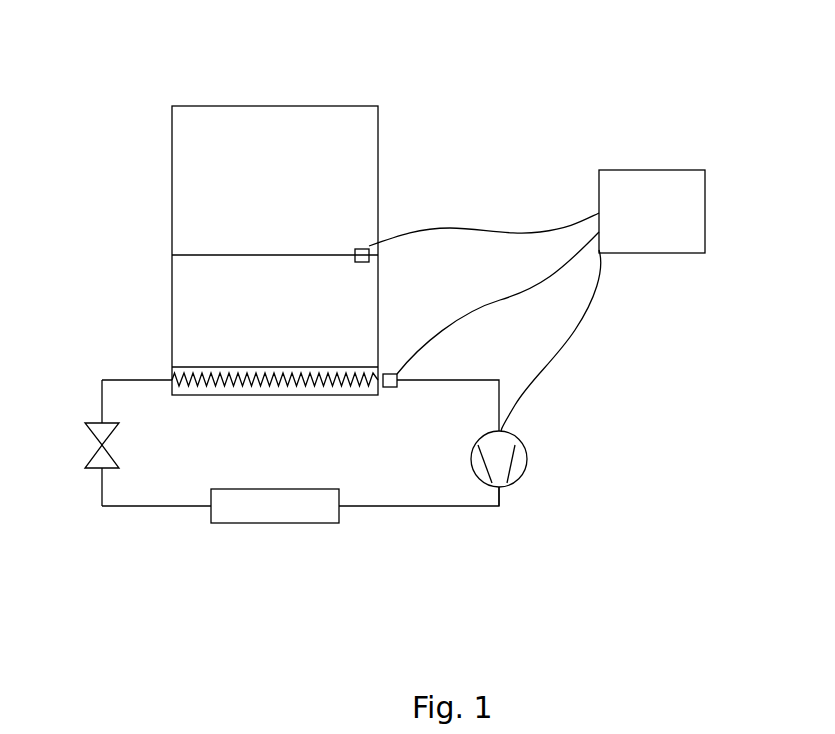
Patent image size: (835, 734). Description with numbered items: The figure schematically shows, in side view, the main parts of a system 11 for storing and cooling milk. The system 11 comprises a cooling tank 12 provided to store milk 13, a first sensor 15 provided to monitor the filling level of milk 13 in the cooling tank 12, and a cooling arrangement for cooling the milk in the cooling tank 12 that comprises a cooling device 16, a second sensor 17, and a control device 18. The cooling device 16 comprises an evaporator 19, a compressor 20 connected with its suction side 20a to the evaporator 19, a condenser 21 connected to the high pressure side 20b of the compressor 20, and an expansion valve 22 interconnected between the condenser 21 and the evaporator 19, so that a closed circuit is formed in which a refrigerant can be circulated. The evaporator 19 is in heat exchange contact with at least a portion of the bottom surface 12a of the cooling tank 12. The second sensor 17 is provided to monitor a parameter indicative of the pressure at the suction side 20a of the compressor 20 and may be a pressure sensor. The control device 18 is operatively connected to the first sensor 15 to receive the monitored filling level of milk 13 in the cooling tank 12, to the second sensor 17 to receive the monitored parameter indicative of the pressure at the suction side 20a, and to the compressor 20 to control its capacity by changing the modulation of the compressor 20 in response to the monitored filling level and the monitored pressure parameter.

The system for storing and cooling milk 11 is at (291, 74).
The cooling tank 12 is at (172, 163).
The bottom surface 12a is at (202, 366).
The milk 13 is at (190, 305).
The first sensor 15 is at (362, 249).
The cooling device 16 is at (623, 377).
The second sensor 17 is at (390, 374).
The control device 18 is at (705, 207).
The evaporator 19 is at (285, 386).
The compressor 20 is at (528, 455).
The suction side 20a is at (498, 432).
The high pressure side 20b is at (500, 488).
The condenser 21 is at (285, 523).
The expansion valve 22 is at (88, 460).